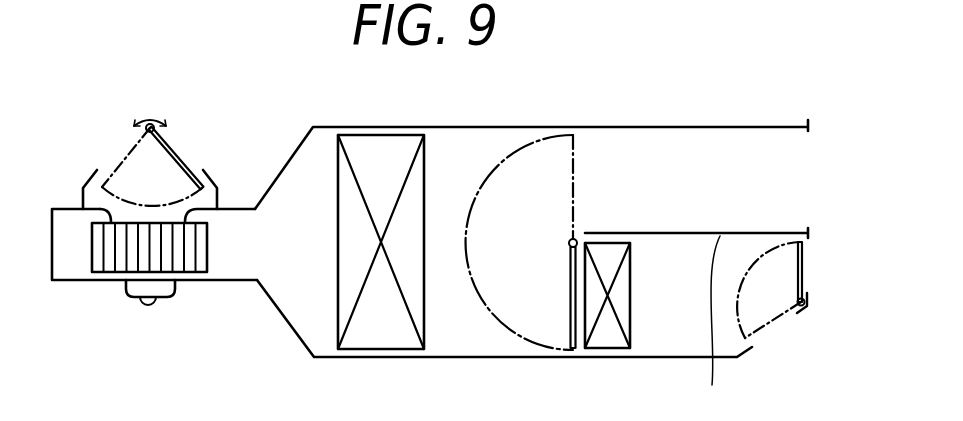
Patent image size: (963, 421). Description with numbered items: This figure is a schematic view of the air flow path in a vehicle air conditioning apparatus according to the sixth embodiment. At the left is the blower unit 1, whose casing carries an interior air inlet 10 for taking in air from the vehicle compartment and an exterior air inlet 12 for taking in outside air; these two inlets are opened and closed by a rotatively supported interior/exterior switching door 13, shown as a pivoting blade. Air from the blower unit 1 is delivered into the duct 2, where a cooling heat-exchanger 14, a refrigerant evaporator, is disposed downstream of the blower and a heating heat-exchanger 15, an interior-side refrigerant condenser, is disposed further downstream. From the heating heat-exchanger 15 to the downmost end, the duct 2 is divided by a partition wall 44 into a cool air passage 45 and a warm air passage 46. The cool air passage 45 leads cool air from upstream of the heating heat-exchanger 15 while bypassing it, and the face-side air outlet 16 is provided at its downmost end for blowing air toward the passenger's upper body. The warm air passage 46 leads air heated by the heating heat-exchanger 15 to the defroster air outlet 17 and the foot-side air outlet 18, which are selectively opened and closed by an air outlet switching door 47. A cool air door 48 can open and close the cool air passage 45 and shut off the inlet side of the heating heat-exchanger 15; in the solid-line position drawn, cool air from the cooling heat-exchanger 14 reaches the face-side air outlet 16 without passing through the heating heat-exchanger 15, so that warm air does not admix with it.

The blower unit 1 is at (78, 292).
The duct 2 is at (342, 127).
The interior air inlet 10 is at (112, 143).
The exterior air inlet 12 is at (177, 134).
The interior/exterior switching door 13 is at (227, 113).
The cooling heat-exchanger 14 is at (378, 350).
The heating heat-exchanger 15 is at (604, 357).
The face-side air outlet 16 is at (793, 158).
The defroster air outlet 17 is at (810, 273).
The foot-side air outlet 18 is at (775, 328).
The partition wall 44 is at (711, 326).
The cool air passage 45 is at (712, 190).
The warm air passage 46 is at (685, 309).
The air outlet switching door 47 is at (803, 263).
The cool air door 48 is at (571, 322).